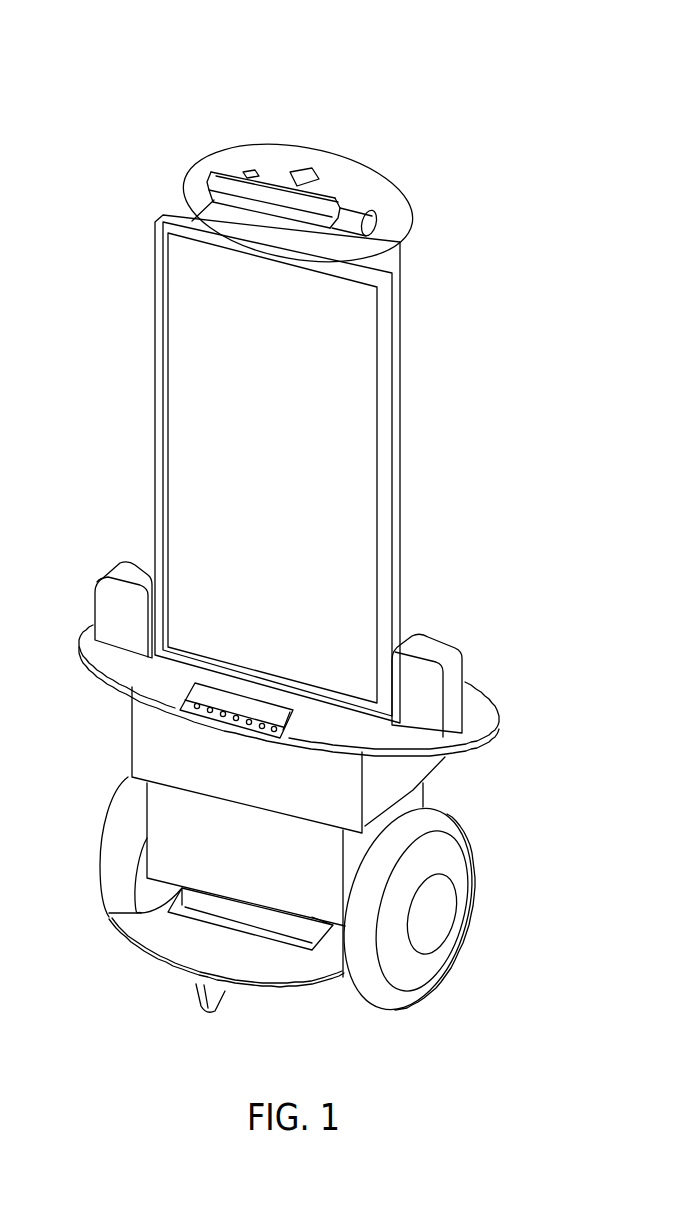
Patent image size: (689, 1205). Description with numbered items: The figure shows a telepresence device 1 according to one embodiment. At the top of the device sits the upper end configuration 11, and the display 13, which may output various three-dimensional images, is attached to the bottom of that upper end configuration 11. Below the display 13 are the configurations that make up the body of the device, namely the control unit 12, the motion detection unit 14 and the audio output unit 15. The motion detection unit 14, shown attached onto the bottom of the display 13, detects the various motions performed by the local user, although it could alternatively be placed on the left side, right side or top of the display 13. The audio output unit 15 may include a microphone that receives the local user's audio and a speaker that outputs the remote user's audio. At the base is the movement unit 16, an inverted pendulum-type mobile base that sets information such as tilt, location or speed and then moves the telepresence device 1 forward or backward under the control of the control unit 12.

The telepresence device 1 is at (183, 103).
The upper end configuration 11 is at (370, 178).
The control unit 12 is at (177, 833).
The display 13 is at (186, 398).
The motion detection unit 14 is at (200, 686).
The audio output unit 15 is at (432, 640).
The movement unit 16 is at (455, 856).